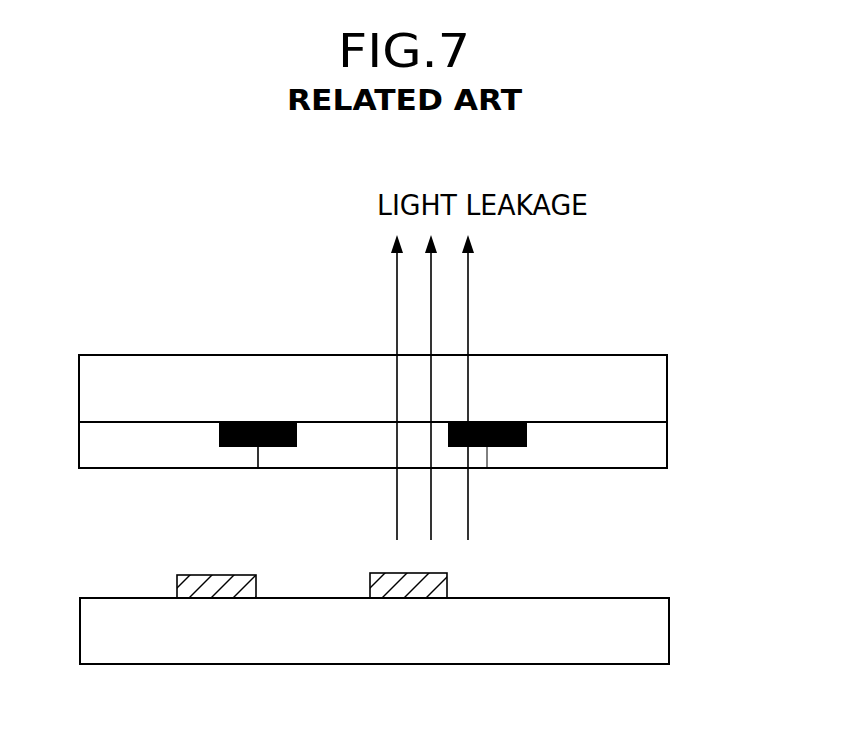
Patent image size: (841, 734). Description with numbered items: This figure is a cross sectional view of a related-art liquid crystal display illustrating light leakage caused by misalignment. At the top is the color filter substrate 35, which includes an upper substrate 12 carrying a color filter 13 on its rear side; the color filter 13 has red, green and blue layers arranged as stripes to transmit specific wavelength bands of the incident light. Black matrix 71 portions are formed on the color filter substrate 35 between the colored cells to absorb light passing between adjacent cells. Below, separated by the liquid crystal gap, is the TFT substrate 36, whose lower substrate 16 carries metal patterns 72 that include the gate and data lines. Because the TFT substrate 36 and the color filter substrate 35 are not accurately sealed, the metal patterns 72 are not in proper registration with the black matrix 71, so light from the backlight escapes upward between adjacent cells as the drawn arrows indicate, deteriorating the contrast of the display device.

The upper substrate 12 is at (667, 375).
The color filter 13 is at (667, 437).
The lower substrate 16 is at (669, 628).
The color filter substrate 35 is at (50, 354).
The TFT substrate 36 is at (65, 596).
The black matrix 71 is at (520, 447).
The metal patterns 72 is at (447, 572).